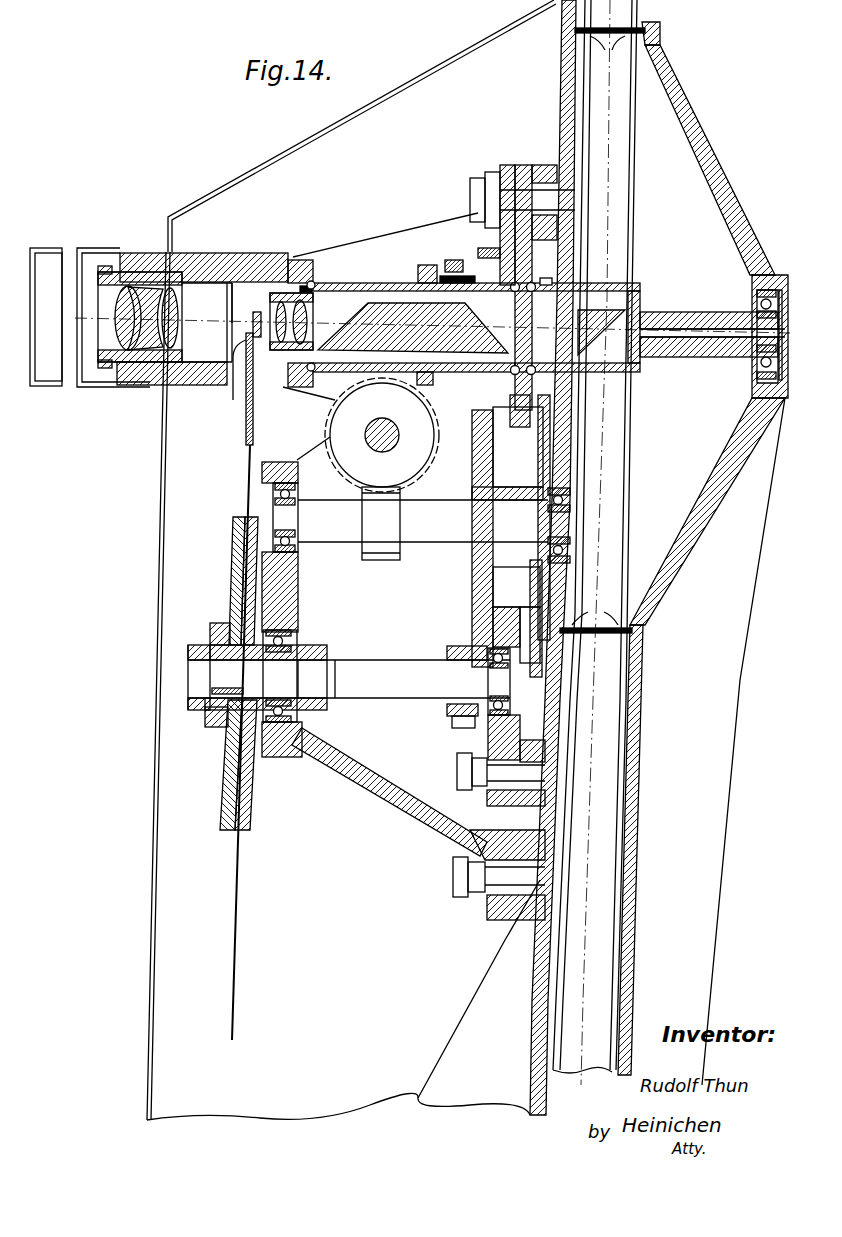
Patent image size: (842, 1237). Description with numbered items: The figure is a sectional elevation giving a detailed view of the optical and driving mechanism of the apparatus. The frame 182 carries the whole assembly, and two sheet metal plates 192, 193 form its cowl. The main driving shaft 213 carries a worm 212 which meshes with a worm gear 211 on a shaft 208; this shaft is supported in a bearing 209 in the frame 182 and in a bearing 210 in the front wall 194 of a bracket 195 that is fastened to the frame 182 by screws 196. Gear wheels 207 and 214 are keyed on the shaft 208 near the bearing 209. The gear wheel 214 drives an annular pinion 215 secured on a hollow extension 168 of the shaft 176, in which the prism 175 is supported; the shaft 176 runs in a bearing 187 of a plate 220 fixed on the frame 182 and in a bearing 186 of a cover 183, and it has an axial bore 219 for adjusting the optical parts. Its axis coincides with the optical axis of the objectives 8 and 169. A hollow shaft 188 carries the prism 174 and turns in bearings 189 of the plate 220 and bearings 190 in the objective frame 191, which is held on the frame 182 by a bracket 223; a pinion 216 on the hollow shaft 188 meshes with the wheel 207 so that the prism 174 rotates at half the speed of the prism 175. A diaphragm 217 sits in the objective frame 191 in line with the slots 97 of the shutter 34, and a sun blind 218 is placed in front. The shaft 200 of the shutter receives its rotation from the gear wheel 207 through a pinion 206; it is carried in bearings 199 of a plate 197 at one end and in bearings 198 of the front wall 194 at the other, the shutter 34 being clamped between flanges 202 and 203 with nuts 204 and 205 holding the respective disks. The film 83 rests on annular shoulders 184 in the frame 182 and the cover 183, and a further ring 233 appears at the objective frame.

The objective 8 is at (105, 380).
The shutter 34 is at (246, 484).
The film 83 is at (625, 20).
The slots of the shutter 97 is at (246, 365).
The hollow extension of the shaft 168 is at (633, 373).
The objective 169 is at (292, 260).
The prism 174 is at (380, 308).
The prism 175 is at (590, 314).
The shaft 176 is at (672, 315).
The frame 182 is at (562, 105).
The cover 183 is at (718, 162).
The annular shoulders 184 is at (602, 330).
The bearing 186 is at (756, 320).
The bearing 187 is at (534, 292).
The hollow shaft 188 is at (342, 281).
The bearings 189 is at (512, 292).
The bearings 190 is at (314, 287).
The objective frame 191 is at (216, 256).
The sheet metal plate 192 is at (330, 136).
The sheet metal plate 193 is at (160, 690).
The front wall of the bracket 194 is at (290, 590).
The bracket 195 is at (400, 798).
The screws 196 is at (465, 900).
The plate 197 is at (486, 741).
The bearings 198 is at (286, 640).
The bearings 199 is at (505, 683).
The shaft of the shutter 200 is at (360, 665).
The flange 202 is at (252, 801).
The flange 203 is at (227, 805).
The nut 204 is at (216, 723).
The nut 205 is at (208, 648).
The pinion 206 is at (448, 710).
The gear wheel 207 is at (474, 593).
The shaft 208 is at (432, 502).
The bearing 209 is at (548, 510).
The bearing 210 is at (296, 502).
The worm gear 211 is at (386, 560).
The worm 212 is at (422, 470).
The main driving shaft 213 is at (376, 446).
The gear wheel 214 is at (545, 470).
The annular pinion 215 is at (548, 280).
The pinion 216 is at (485, 250).
The diaphragm 217 is at (252, 310).
The sun blind 218 is at (45, 252).
The axial bore 219 is at (695, 338).
The plate 220 is at (522, 180).
The bracket 223 is at (405, 232).
The ring 233 is at (314, 290).